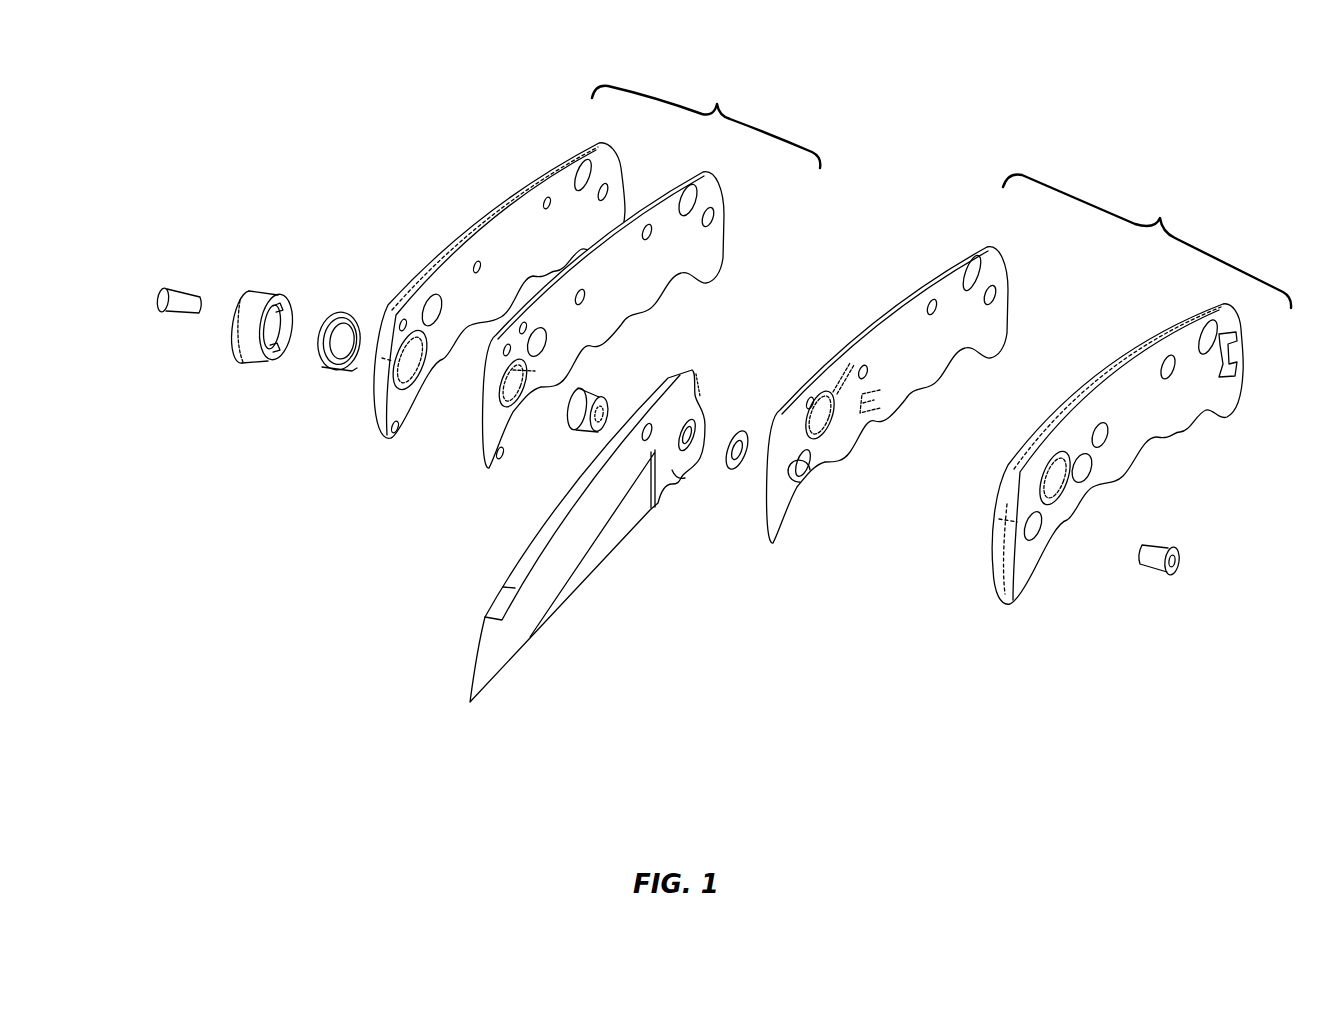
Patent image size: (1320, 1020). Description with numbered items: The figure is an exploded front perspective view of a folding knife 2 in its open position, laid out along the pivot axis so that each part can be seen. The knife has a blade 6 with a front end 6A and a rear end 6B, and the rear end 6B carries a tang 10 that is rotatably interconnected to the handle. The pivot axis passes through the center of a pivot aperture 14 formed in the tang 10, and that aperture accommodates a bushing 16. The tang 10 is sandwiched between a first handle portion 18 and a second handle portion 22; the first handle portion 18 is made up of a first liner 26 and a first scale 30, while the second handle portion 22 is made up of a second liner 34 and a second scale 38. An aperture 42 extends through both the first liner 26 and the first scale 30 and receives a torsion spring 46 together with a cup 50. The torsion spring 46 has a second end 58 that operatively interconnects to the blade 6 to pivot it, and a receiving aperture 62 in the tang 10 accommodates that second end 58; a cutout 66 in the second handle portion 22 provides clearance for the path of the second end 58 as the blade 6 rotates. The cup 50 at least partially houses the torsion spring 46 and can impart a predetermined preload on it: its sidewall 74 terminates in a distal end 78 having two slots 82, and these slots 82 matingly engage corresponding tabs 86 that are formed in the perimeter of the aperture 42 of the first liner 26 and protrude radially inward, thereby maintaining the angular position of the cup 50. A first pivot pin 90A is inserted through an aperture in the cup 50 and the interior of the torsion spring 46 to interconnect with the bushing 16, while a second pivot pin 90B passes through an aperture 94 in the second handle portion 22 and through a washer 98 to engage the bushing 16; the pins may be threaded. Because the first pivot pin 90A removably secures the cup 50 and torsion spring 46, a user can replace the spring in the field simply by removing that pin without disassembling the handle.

The folding knife 2 is at (958, 101).
The blade 6 is at (583, 518).
The front end 6A is at (475, 655).
The rear end 6B is at (670, 378).
The tang 10 is at (586, 513).
The pivot aperture 14 is at (692, 420).
The bushing 16 is at (580, 428).
The first handle portion 18 is at (706, 119).
The second handle portion 22 is at (1147, 242).
The first liner 26 is at (668, 184).
The first scale 30 is at (546, 161).
The second liner 34 is at (887, 377).
The second scale 38 is at (1160, 329).
The aperture 42 is at (397, 380).
The torsion spring 46 is at (337, 335).
The cup 50 is at (268, 311).
The second end 58 is at (352, 373).
The receiving aperture 62 is at (676, 452).
The cutout 66 is at (806, 474).
The sidewall 74 is at (248, 348).
The distal end 78 is at (284, 304).
The slots 82 is at (277, 352).
The tabs 86 is at (513, 370).
The first pivot pin 90A is at (176, 290).
The second pivot pin 90B is at (1180, 550).
The aperture 94 is at (796, 464).
The washer 98 is at (744, 427).